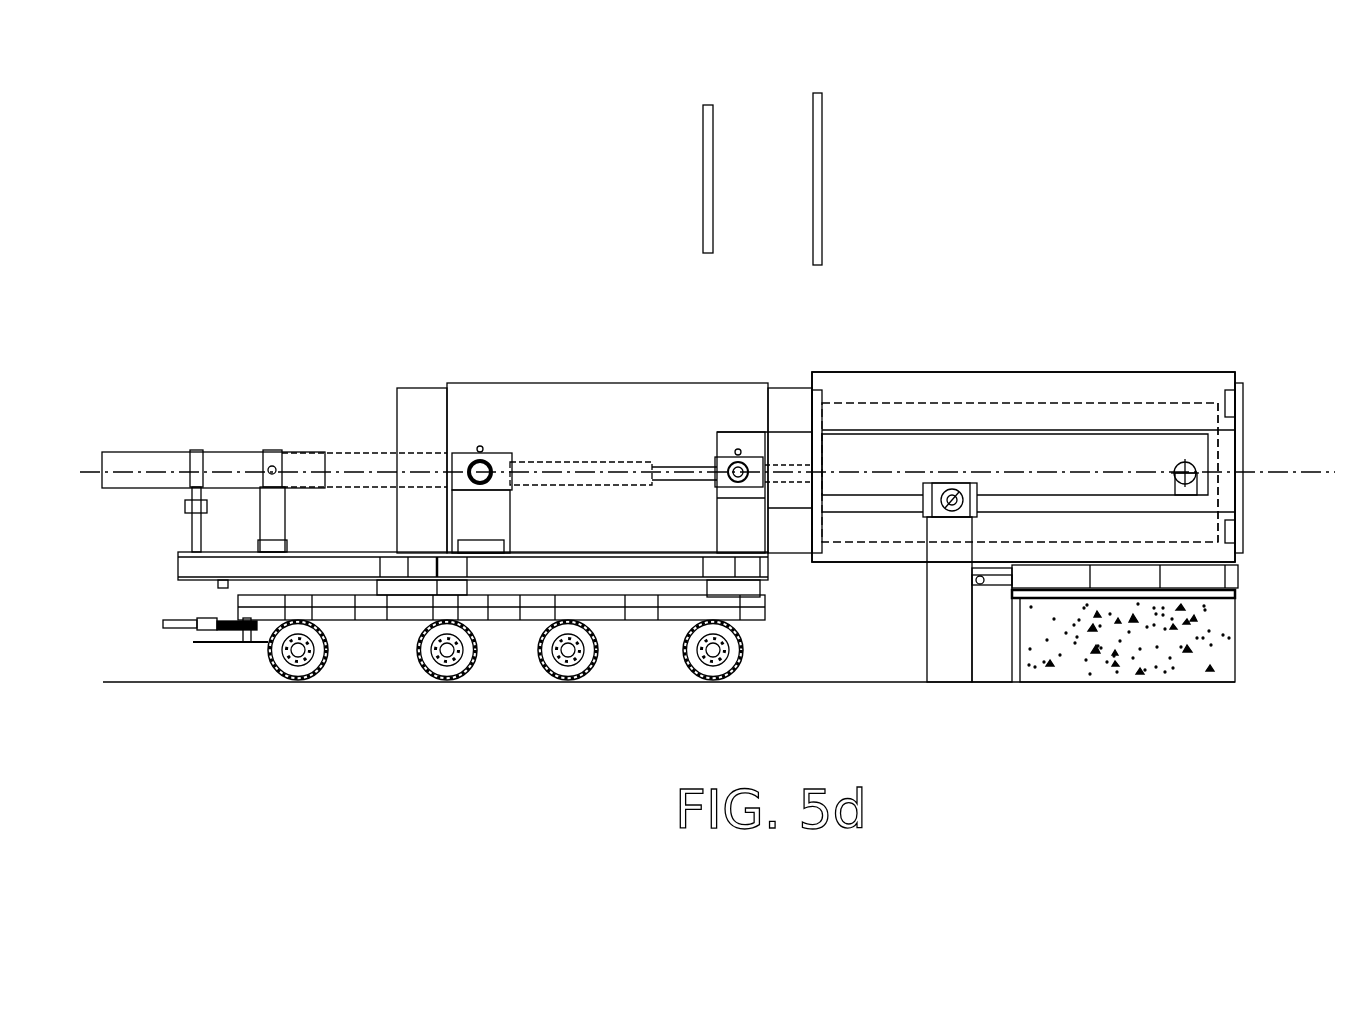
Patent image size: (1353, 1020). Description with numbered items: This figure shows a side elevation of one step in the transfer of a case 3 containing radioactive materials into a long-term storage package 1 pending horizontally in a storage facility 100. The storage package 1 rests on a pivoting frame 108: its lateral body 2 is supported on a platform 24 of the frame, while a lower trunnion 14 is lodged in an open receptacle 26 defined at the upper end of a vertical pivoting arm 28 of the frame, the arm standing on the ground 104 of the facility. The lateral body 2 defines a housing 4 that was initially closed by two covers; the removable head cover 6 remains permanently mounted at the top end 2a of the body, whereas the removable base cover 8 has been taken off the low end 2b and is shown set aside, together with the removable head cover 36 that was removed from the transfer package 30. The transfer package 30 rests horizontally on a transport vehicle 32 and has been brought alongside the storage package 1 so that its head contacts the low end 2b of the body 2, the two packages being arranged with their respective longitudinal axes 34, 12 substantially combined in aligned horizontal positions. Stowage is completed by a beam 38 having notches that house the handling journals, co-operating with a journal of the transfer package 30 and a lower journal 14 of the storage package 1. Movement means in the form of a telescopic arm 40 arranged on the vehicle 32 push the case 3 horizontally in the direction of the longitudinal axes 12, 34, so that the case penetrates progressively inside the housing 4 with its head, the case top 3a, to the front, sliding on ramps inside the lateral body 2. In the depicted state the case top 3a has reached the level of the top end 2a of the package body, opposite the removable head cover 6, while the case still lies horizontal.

The long-term storage package 1 is at (1056, 303).
The lateral body 2 is at (1150, 385).
The top end 2a is at (1208, 372).
The low end 2b is at (832, 372).
The case 3 is at (898, 403).
The case top 3a is at (1218, 425).
The housing 4 is at (953, 421).
The removable head cover 6 is at (1243, 408).
The removable base cover 8 is at (816, 158).
The longitudinal axis 12 is at (1318, 470).
The lower trunnion 14 is at (958, 492).
The platform 24 is at (1212, 562).
The open receptacle 26 is at (940, 497).
The vertical pivoting arm 28 is at (935, 625).
The transfer package 30 is at (468, 378).
The transport vehicle 32 is at (270, 668).
The longitudinal axis 34 is at (357, 456).
The removable head cover 36 is at (707, 180).
The beam 38 is at (912, 430).
The telescopic arm 40 is at (598, 458).
The storage facility 100 is at (946, 308).
The ground 104 is at (790, 680).
The pivoting frame 108 is at (950, 665).